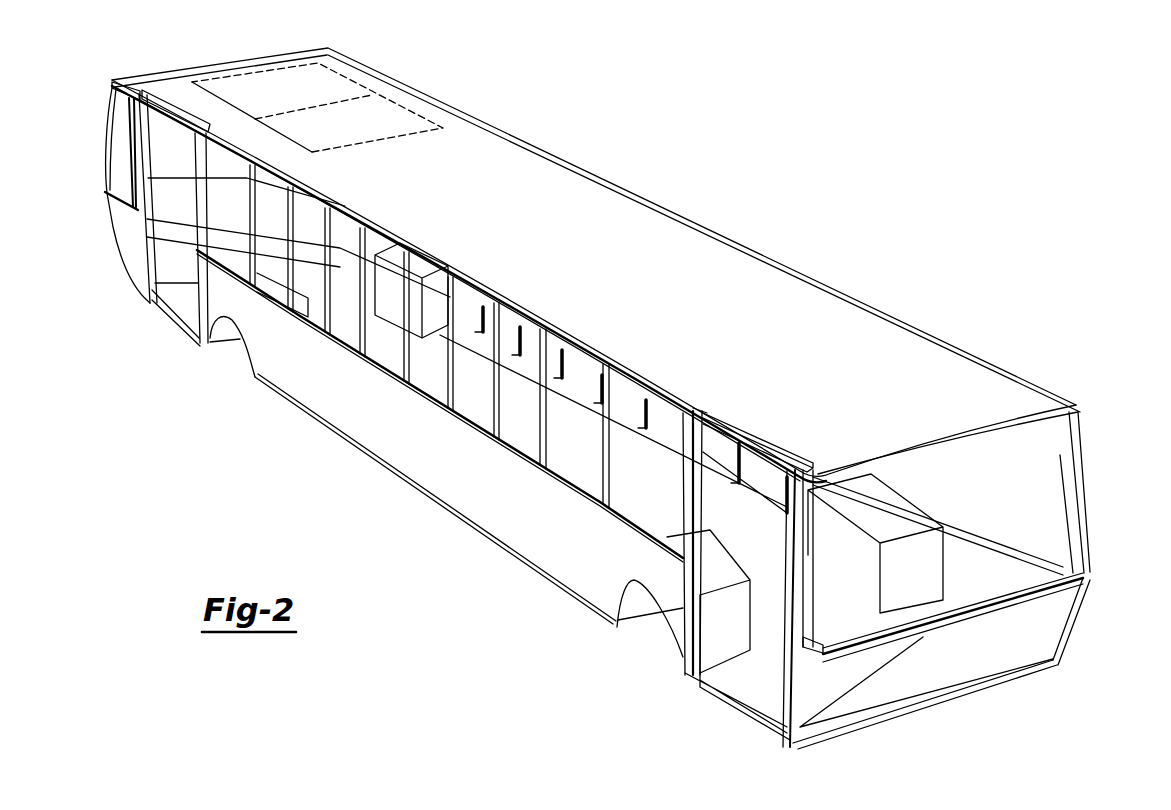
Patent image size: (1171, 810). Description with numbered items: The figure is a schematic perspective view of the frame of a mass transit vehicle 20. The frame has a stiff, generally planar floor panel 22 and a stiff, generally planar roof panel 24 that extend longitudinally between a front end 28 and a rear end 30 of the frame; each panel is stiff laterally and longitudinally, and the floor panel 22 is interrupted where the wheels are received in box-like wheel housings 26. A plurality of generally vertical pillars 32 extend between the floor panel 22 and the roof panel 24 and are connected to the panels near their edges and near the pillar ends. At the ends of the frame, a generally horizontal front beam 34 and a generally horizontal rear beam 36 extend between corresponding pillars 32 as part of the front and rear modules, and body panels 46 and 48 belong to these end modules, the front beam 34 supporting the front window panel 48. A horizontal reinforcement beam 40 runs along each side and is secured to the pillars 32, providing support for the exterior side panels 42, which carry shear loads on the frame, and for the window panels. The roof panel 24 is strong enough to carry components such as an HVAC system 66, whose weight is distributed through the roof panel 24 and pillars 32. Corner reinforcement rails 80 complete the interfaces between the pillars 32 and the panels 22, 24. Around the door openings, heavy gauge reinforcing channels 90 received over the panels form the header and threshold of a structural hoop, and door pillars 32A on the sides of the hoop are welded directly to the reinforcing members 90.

The mass transit vehicle 20 is at (650, 155).
The floor panel 22 is at (664, 487).
The roof panel 24 is at (576, 241).
The wheel housing 26 is at (229, 350).
The front end 28 is at (1009, 724).
The rear end 30 is at (201, 61).
The pillar 32 is at (193, 237).
The door pillar 32A is at (703, 535).
The front beam 34 is at (1043, 575).
The rear beam 36 is at (170, 180).
The horizontal reinforcement beam 40 is at (1013, 510).
The exterior side panel 42 is at (363, 420).
The body panel 46 is at (977, 663).
The front window panel 48 is at (175, 230).
The HVAC system 66 is at (340, 124).
The corner reinforcement rail 80 is at (520, 138).
The reinforcing channel 90 is at (196, 126).